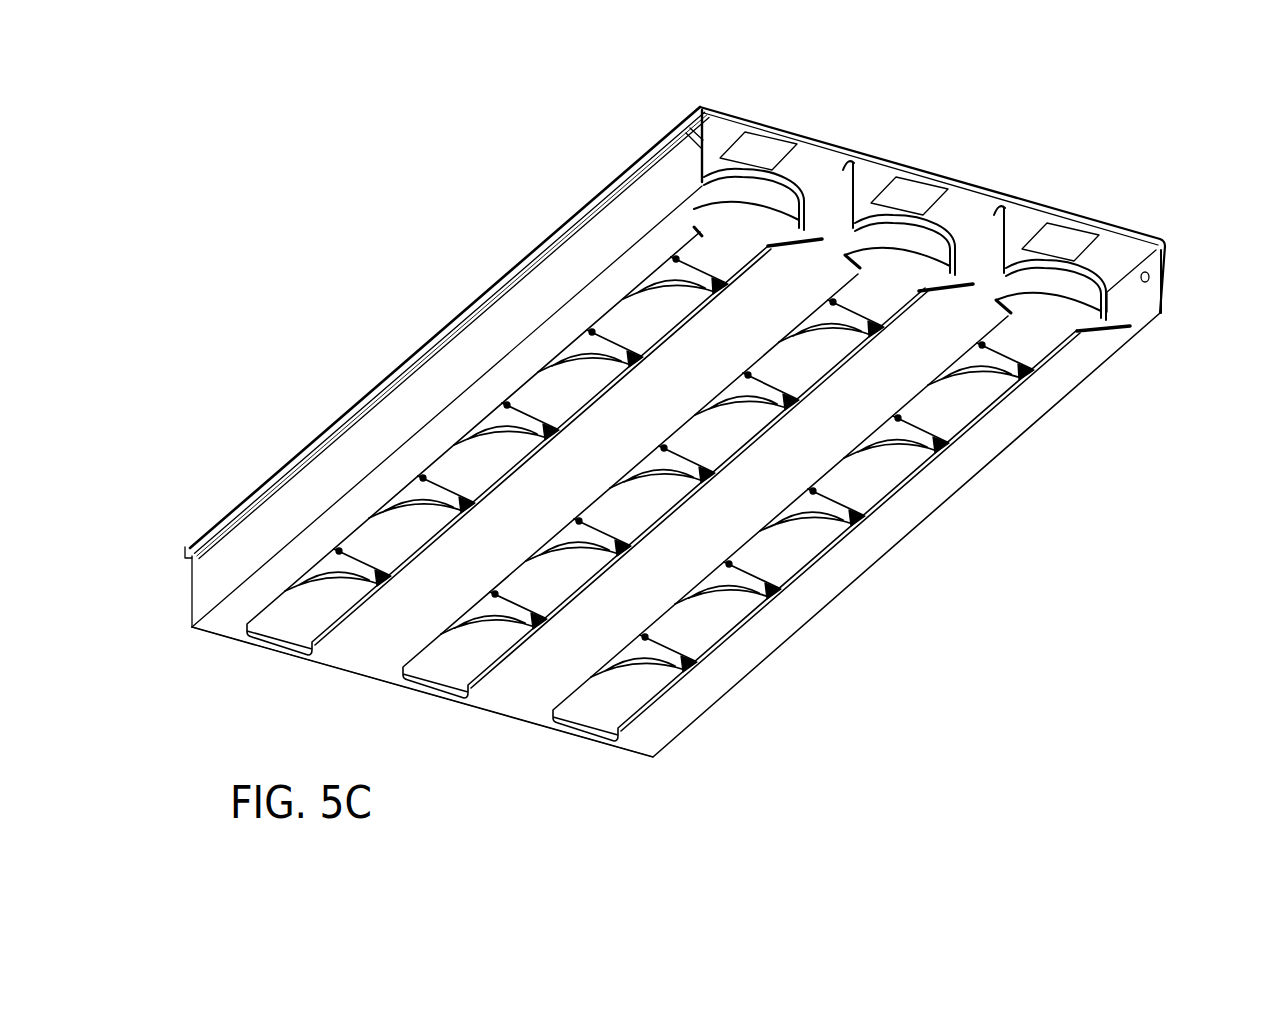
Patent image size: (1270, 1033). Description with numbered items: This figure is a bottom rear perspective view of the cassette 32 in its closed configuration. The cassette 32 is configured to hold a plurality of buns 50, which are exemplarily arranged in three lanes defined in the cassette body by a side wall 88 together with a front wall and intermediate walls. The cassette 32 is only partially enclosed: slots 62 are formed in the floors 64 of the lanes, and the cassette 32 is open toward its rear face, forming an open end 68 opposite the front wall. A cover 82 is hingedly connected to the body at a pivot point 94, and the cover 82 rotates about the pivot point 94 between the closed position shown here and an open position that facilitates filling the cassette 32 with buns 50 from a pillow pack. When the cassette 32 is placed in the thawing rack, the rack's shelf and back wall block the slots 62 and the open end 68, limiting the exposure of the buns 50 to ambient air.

The cassette 32 is at (333, 363).
The buns 50 is at (395, 530).
The slots 62 is at (271, 647).
The floors 64 is at (233, 618).
The open end 68 is at (1120, 252).
The cover 82 is at (630, 167).
The side wall 88 is at (528, 292).
The pivot point 94 is at (690, 152).